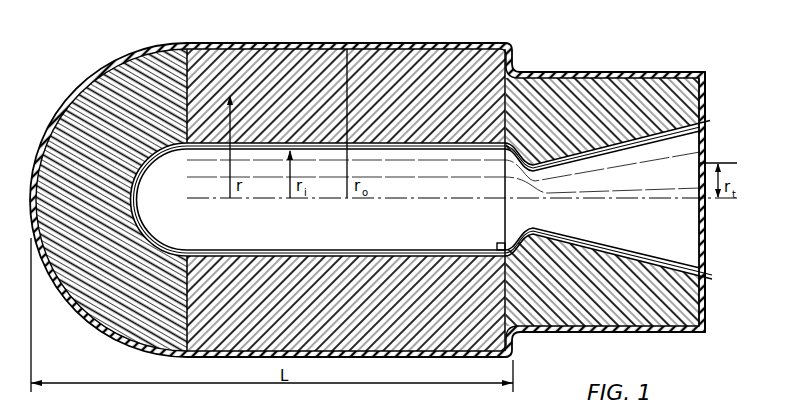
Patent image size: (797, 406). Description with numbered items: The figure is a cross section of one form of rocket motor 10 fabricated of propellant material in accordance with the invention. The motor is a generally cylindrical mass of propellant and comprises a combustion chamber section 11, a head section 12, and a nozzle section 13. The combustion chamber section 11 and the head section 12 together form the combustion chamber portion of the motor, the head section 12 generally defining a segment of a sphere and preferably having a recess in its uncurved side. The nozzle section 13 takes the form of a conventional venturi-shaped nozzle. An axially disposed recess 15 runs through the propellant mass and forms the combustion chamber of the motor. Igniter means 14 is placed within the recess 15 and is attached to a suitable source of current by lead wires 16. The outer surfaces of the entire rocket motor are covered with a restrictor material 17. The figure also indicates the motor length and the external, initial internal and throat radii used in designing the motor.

The rocket motor 10 is at (387, 42).
The combustion chamber section 11 is at (281, 50).
The head section 12 is at (136, 80).
The nozzle section 13 is at (620, 86).
The igniter means 14 is at (504, 246).
The recess 15 is at (316, 248).
The lead wires 16 is at (716, 273).
The restrictor material 17 is at (708, 86).